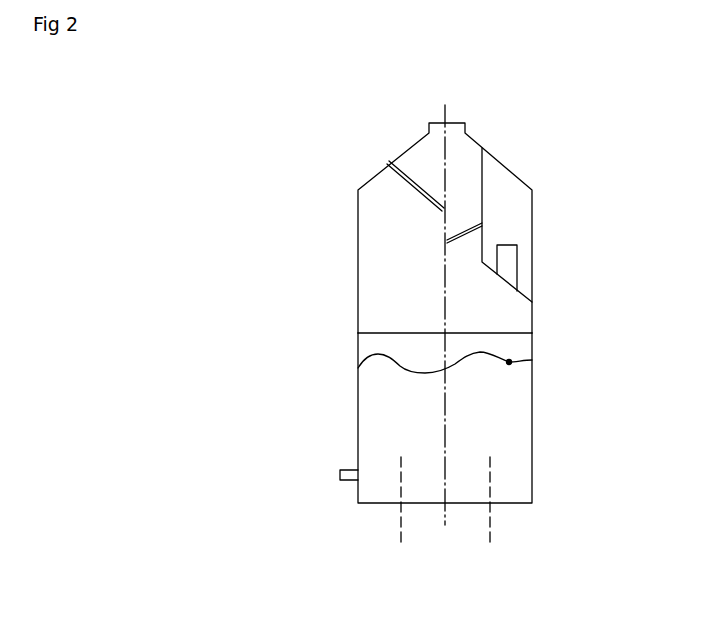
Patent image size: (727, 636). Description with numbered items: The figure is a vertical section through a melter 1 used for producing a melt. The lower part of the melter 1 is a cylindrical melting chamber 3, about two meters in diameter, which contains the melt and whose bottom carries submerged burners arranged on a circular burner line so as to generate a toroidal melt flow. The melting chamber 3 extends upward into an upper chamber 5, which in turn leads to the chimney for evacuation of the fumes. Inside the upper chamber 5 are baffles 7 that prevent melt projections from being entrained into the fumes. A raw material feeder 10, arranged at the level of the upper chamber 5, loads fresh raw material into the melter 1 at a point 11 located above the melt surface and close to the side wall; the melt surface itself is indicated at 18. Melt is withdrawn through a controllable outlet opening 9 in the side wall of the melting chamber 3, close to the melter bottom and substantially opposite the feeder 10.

The melter 1 is at (295, 515).
The melting chamber 3 is at (358, 357).
The upper chamber 5 is at (358, 228).
The baffles 7 is at (410, 182).
The controllable outlet opening 9 is at (340, 468).
The raw material feeder 10 is at (517, 272).
The feeding point 11 is at (509, 362).
The liquid level 18 is at (522, 357).